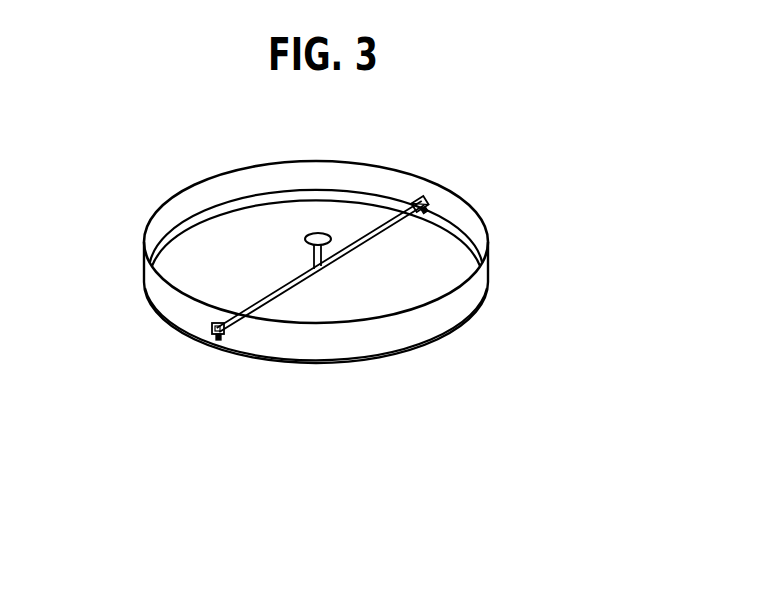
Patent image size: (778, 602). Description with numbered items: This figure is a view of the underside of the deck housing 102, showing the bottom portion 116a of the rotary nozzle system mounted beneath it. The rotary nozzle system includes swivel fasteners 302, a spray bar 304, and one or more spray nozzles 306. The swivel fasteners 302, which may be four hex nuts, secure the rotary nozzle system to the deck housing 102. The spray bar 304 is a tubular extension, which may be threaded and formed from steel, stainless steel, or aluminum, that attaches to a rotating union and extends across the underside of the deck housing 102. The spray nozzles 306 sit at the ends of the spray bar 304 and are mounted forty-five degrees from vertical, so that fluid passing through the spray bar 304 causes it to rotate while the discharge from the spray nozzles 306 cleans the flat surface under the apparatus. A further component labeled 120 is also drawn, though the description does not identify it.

The deck housing 102 is at (490, 250).
The base ring 120 is at (434, 345).
The swivel fasteners 302 is at (288, 258).
The spray bar 304 is at (288, 290).
The spray nozzles 306 is at (430, 210).
The bottom portion of the rotary nozzle system 116a is at (243, 425).